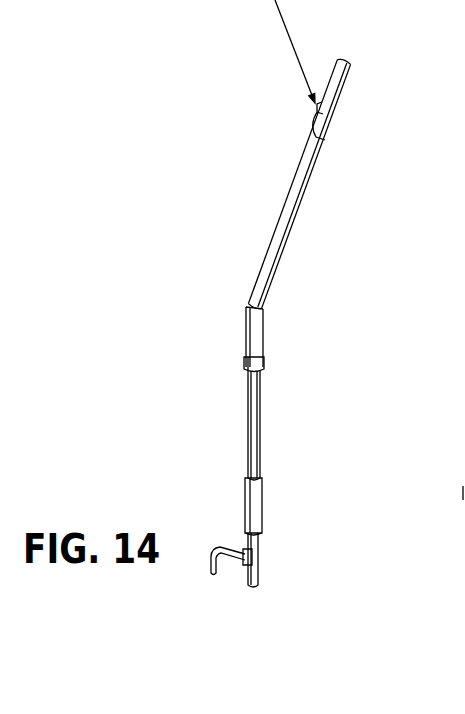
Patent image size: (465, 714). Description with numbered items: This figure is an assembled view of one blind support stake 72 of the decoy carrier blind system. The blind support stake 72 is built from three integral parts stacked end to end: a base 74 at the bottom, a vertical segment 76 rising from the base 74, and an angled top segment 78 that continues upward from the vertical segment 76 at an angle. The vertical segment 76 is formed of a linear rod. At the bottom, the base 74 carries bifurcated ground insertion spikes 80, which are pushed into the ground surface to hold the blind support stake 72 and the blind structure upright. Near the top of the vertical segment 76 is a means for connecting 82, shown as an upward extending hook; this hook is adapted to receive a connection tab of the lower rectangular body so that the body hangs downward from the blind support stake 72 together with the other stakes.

The blind support stake 72 is at (212, 234).
The angled top segment 78 is at (278, 180).
The means for connecting 82 is at (228, 351).
The vertical segment 76 is at (280, 401).
The base 74 is at (276, 543).
The bifurcated ground insertion spikes 80 is at (205, 529).